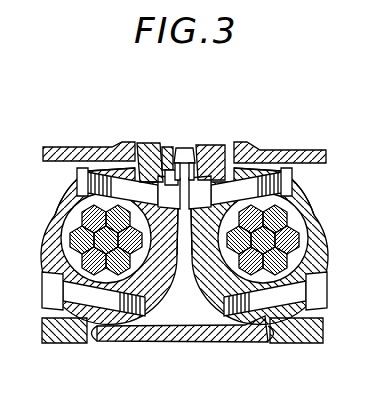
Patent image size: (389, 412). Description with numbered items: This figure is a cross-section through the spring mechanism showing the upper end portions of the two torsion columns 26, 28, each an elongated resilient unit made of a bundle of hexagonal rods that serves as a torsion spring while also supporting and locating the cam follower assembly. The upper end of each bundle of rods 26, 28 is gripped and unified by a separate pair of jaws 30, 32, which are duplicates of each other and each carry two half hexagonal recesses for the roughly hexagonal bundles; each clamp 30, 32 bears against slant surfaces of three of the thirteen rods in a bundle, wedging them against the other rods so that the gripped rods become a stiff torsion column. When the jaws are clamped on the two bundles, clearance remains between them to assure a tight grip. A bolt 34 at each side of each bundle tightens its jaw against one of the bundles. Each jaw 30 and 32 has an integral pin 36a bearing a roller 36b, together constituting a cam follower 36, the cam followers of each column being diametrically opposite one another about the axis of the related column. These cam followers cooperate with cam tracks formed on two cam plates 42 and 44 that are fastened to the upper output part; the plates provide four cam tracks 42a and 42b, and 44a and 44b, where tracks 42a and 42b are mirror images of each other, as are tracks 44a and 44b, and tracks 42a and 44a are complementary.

The torsion column 26 is at (63, 227).
The torsion column 28 is at (273, 233).
The jaw 30 is at (62, 206).
The jaw 32 is at (193, 284).
The bolt 34 is at (42, 283).
The cam follower 36 is at (139, 131).
The pin 36a is at (150, 141).
The roller 36b is at (178, 138).
The cam plate 42 is at (206, 350).
The cam track 42a is at (95, 328).
The cam track 42b is at (270, 334).
The cam plate 44 is at (209, 138).
The cam track 44a is at (132, 140).
The cam track 44b is at (240, 143).